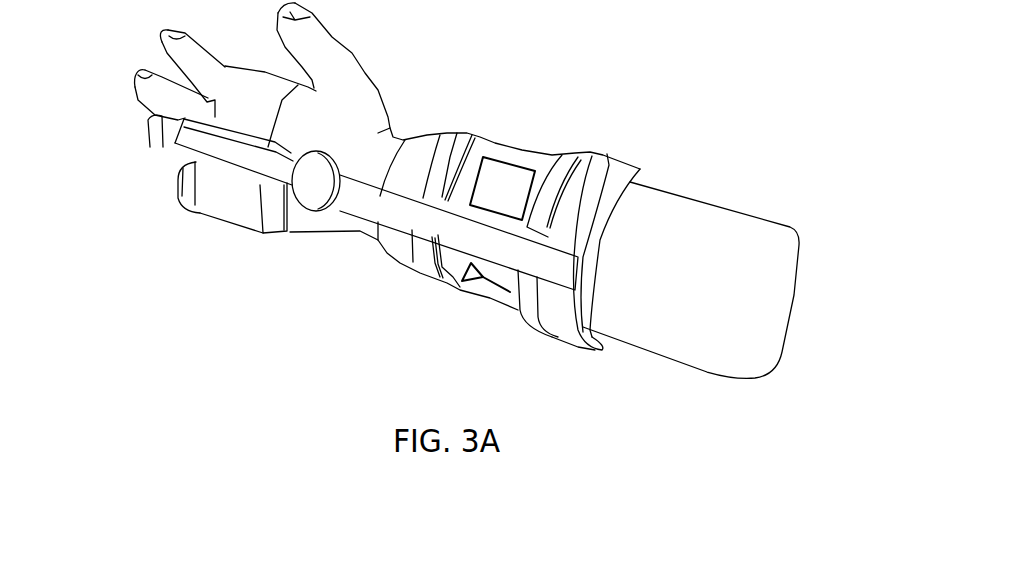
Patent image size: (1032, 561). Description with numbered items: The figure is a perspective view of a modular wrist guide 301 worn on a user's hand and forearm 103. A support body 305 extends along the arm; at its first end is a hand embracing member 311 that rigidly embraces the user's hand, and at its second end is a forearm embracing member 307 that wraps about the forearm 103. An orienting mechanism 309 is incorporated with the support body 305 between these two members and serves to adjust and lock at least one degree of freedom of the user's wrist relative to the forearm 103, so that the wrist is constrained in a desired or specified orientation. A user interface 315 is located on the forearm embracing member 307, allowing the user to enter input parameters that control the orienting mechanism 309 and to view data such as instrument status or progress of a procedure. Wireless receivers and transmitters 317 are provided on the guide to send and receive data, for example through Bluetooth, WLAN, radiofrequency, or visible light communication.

The user's forearm 103 is at (799, 235).
The modular wrist guide 301 is at (717, 91).
The support body 305 is at (228, 172).
The forearm embracing member 307 is at (515, 145).
The orienting mechanism 309 is at (302, 212).
The hand embracing member 311 is at (197, 210).
The user interface 315 is at (528, 161).
The wireless receivers and transmitters 317 is at (492, 285).